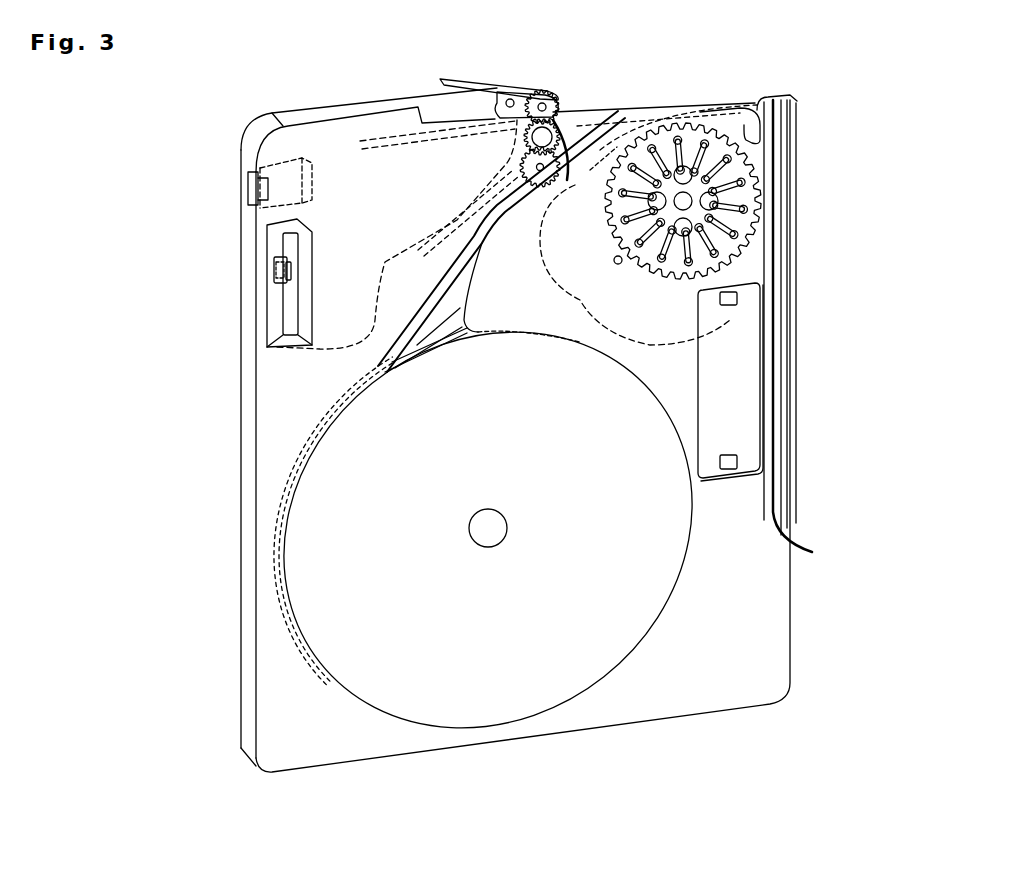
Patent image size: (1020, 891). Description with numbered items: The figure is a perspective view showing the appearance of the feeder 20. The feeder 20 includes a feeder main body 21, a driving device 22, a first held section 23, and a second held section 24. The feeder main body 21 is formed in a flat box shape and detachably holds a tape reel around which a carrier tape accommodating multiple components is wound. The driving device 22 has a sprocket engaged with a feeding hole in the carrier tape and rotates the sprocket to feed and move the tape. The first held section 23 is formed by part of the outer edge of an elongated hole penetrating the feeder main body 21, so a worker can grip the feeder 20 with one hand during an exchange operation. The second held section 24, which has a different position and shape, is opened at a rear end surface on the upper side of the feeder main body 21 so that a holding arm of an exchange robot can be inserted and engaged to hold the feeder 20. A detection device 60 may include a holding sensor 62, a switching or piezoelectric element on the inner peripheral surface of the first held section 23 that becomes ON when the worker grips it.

The feeder 20 is at (238, 129).
The feeder main body 21 is at (248, 472).
The driving device 22 is at (745, 250).
The first held section 23 is at (285, 315).
The second held section 24 is at (251, 190).
The detection device 60 is at (263, 263).
The holding sensor 62 is at (255, 270).